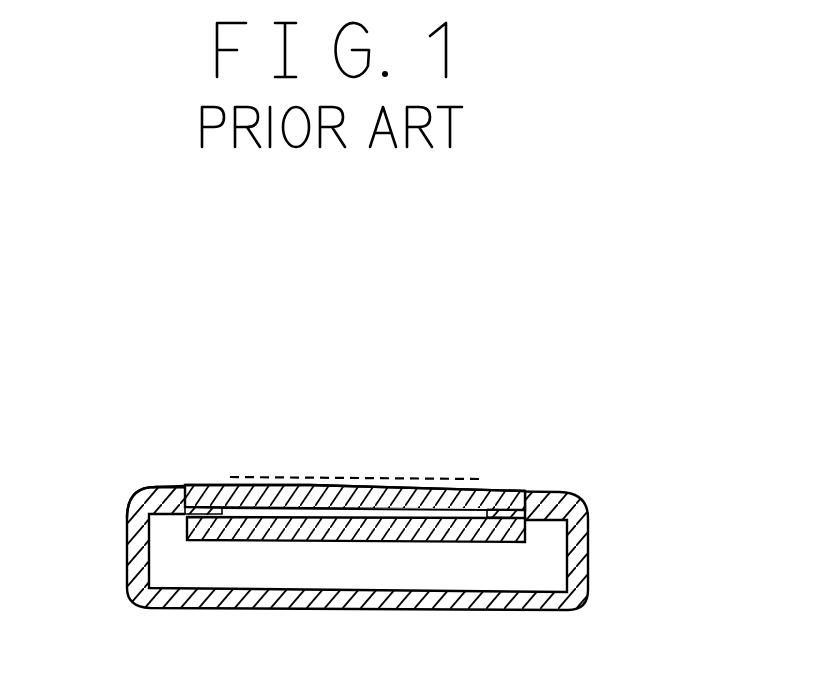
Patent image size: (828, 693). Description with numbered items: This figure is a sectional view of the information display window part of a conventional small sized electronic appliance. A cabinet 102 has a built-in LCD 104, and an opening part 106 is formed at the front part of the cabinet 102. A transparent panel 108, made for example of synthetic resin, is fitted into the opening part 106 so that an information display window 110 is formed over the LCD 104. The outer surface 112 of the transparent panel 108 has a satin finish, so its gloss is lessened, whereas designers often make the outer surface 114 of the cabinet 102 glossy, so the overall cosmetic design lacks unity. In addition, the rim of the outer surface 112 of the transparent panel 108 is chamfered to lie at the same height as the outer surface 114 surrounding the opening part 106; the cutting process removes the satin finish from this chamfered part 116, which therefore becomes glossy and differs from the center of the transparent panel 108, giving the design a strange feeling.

The cabinet 102 is at (588, 552).
The LCD 104 is at (310, 532).
The opening part 106 is at (497, 487).
The transparent panel 108 is at (277, 483).
The information display window 110 is at (362, 465).
The outer surface of the transparent panel 112 is at (417, 480).
The outer surface of the cabinet 114 is at (152, 488).
The chamfered part 116 is at (205, 485).